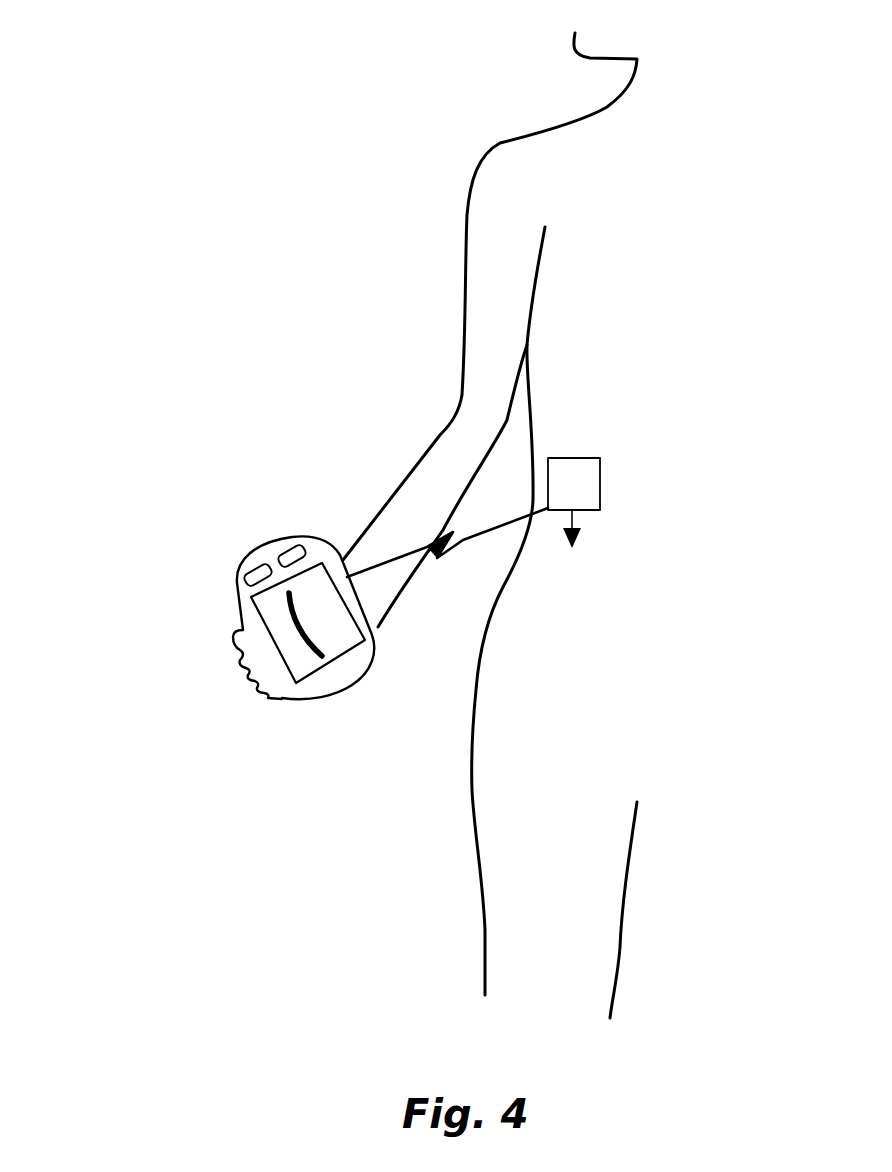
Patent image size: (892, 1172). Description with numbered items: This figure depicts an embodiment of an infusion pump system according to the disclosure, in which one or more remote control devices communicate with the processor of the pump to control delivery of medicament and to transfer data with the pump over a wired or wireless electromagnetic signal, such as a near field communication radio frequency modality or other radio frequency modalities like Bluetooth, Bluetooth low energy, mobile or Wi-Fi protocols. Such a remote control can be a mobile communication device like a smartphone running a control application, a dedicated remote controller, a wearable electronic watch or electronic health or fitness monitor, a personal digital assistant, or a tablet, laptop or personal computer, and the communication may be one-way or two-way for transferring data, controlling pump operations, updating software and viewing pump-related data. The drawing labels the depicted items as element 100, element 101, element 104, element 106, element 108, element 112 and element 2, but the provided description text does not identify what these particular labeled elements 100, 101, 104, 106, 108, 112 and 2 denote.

The wearable device 100 is at (238, 600).
The monitoring system 101 is at (665, 454).
The user body 104 is at (489, 129).
The transmitted signal 106 is at (574, 548).
The external device 108 is at (602, 497).
The wrist band 112 is at (403, 550).
The stray mark 2 is at (742, 356).